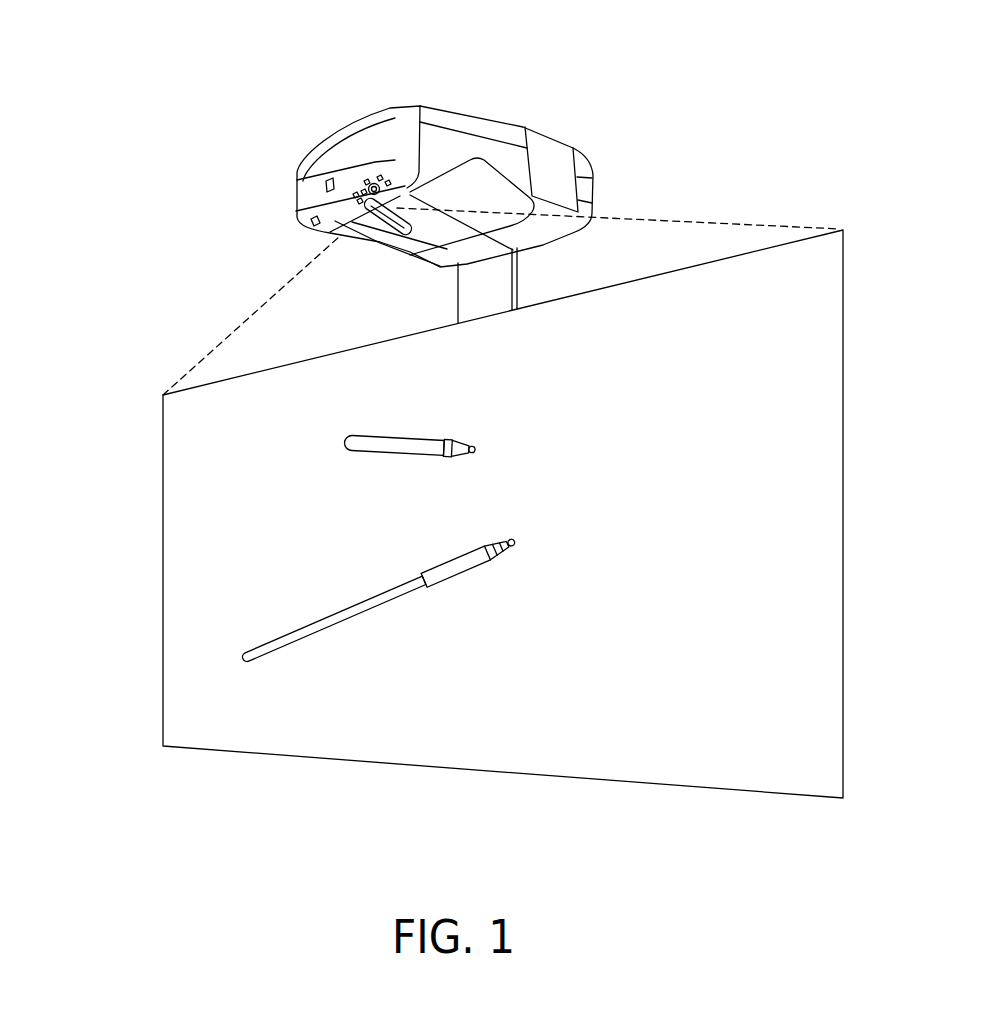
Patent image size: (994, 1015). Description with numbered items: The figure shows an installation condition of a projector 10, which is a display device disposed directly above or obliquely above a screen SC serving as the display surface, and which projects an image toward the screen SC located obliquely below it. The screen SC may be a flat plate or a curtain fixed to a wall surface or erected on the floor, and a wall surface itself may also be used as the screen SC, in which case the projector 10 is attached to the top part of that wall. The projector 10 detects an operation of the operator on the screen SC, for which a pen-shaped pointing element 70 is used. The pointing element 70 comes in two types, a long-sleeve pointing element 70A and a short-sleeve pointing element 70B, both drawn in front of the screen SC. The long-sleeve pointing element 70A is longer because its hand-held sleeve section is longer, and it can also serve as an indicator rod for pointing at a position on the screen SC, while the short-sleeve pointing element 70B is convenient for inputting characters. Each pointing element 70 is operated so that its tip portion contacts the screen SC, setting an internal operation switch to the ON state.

The projector 10 is at (465, 112).
The screen SC is at (162, 550).
The pointing element 70 is at (572, 393).
The long-sleeve pointing element 70A is at (413, 608).
The short-sleeve pointing element 70B is at (388, 462).